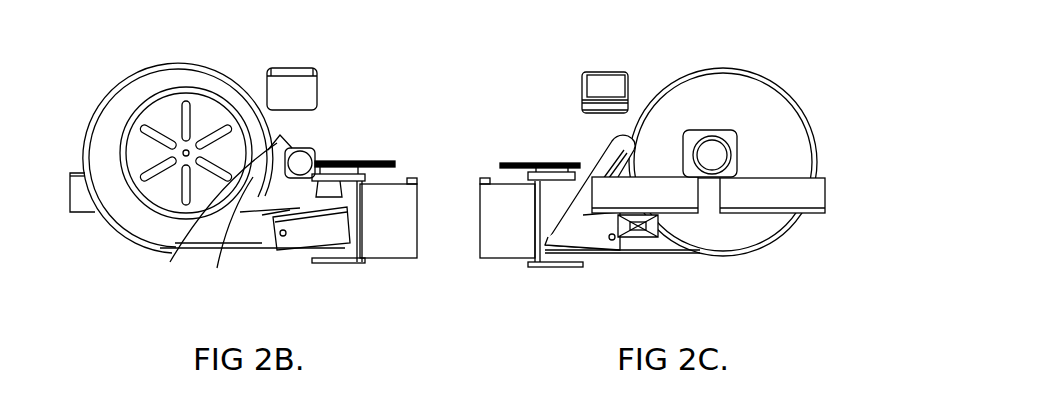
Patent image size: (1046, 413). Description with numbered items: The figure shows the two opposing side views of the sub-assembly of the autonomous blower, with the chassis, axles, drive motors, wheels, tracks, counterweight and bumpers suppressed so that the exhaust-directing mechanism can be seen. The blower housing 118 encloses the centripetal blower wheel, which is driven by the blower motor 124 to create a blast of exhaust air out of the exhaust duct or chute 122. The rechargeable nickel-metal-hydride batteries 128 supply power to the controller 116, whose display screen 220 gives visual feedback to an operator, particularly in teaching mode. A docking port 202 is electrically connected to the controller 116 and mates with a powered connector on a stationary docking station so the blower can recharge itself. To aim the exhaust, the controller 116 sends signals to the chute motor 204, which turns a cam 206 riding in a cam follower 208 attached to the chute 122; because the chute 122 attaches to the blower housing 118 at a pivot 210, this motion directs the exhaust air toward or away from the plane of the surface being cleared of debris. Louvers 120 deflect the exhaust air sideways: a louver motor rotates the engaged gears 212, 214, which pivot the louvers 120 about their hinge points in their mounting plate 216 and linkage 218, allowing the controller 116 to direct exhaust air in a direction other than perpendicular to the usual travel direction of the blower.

In FIG. 2B, the controller 116 is at (277, 88).
In FIG. 2C, the controller 116 is at (582, 93).
In FIG. 2B, the blower housing 118 is at (170, 84).
In FIG. 2C, the blower housing 118 is at (717, 88).
In FIG. 2B, the louvers 120 is at (490, 228).
In FIG. 2C, the louvers 120 is at (507, 218).
In FIG. 2B, the exhaust duct 122 is at (317, 232).
In FIG. 2C, the exhaust duct 122 is at (592, 235).
In FIG. 2C, the blower motor 124 is at (712, 150).
In FIG. 2B, the rechargeable batteries 128 is at (74, 206).
In FIG. 2C, the rechargeable batteries 128 is at (683, 193).
In FIG. 2C, the docking port 202 is at (653, 237).
In FIG. 2B, the chute motor 204 is at (300, 161).
In FIG. 2B, the cam 206 is at (223, 223).
In FIG. 2C, the cam 206 is at (588, 153).
In FIG. 2B, the cam follower 208 is at (190, 200).
In FIG. 2C, the cam follower 208 is at (588, 147).
In FIG. 2B, the pivot 210 is at (273, 222).
In FIG. 2B, the gear 212 is at (335, 162).
In FIG. 2B, the gear 214 is at (355, 172).
In FIG. 2C, the gear 214 is at (537, 163).
In FIG. 2B, the mounting plate 216 is at (363, 263).
In FIG. 2C, the mounting plate 216 is at (545, 266).
In FIG. 2B, the linkage 218 is at (417, 181).
In FIG. 2C, the display screen 220 is at (602, 85).